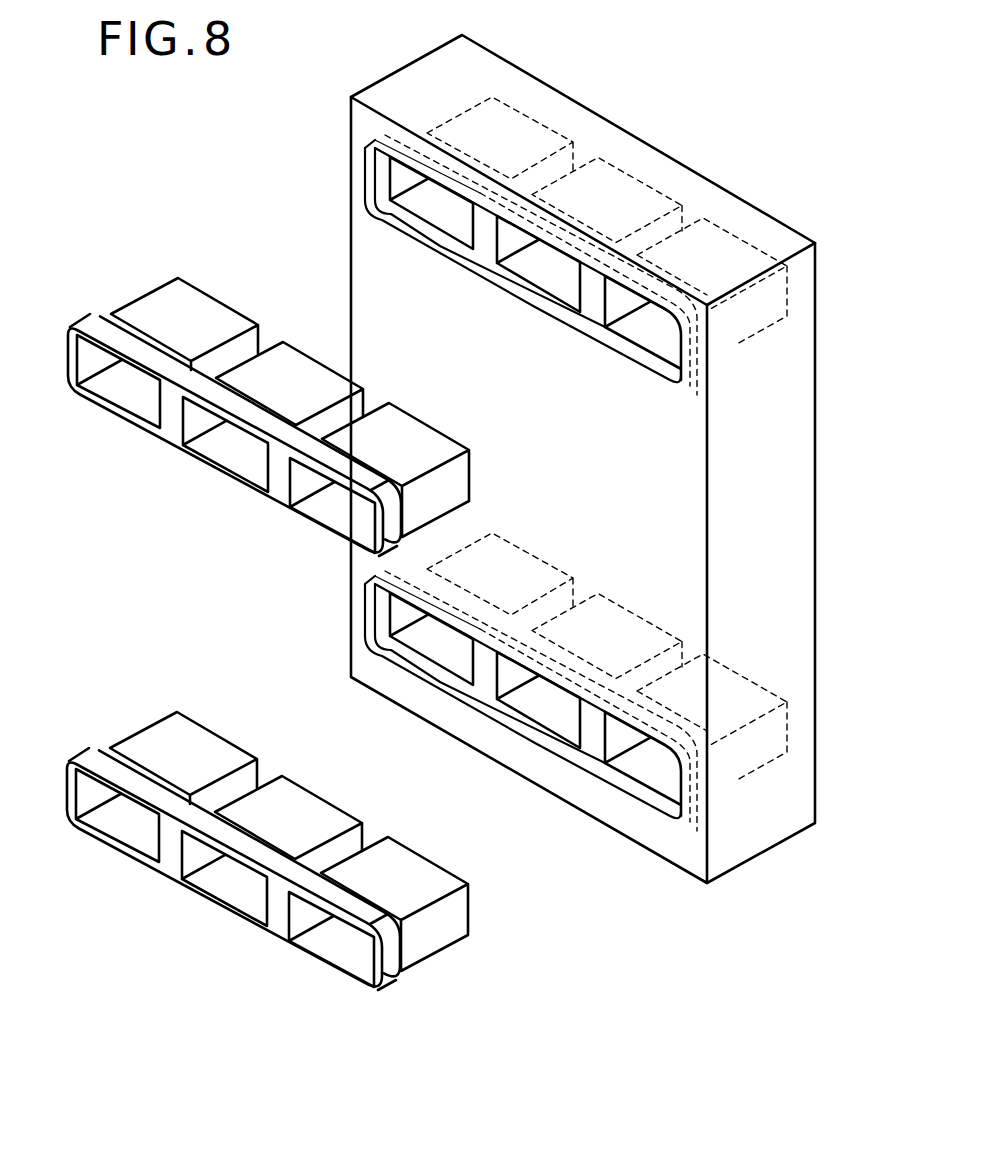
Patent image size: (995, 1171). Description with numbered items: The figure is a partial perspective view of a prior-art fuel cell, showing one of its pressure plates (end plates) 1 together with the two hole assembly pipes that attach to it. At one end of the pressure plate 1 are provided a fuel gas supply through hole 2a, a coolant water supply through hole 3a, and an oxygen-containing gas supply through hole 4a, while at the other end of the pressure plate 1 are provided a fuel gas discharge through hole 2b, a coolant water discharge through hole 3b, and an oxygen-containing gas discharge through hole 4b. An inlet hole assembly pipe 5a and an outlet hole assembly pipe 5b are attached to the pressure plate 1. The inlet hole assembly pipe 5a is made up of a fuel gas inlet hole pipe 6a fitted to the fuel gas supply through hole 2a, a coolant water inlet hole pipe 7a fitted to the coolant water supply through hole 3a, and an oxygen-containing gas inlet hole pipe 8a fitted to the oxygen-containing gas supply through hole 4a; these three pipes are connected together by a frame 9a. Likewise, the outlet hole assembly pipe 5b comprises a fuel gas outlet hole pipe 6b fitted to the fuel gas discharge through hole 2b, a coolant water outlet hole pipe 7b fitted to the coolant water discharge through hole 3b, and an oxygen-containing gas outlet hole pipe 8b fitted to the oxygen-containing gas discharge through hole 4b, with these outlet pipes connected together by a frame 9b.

The pressure plate 1 is at (782, 532).
The fuel gas supply through hole 2a is at (432, 212).
The coolant water supply through hole 3a is at (538, 263).
The oxygen-containing gas supply through hole 4a is at (645, 325).
The fuel gas discharge through hole 2b is at (642, 765).
The coolant water discharge through hole 3b is at (535, 703).
The oxygen-containing gas discharge through hole 4b is at (428, 653).
The inlet hole assembly pipe 5a is at (253, 379).
The outlet hole assembly pipe 5b is at (252, 812).
The fuel gas inlet hole pipe 6a is at (217, 327).
The coolant water inlet hole pipe 7a is at (305, 390).
The oxygen-containing gas inlet hole pipe 8a is at (410, 442).
The fuel gas outlet hole pipe 6b is at (394, 881).
The coolant water outlet hole pipe 7b is at (288, 798).
The oxygen-containing gas outlet hole pipe 8b is at (183, 739).
The frame 9a is at (125, 338).
The frame 9b is at (233, 869).